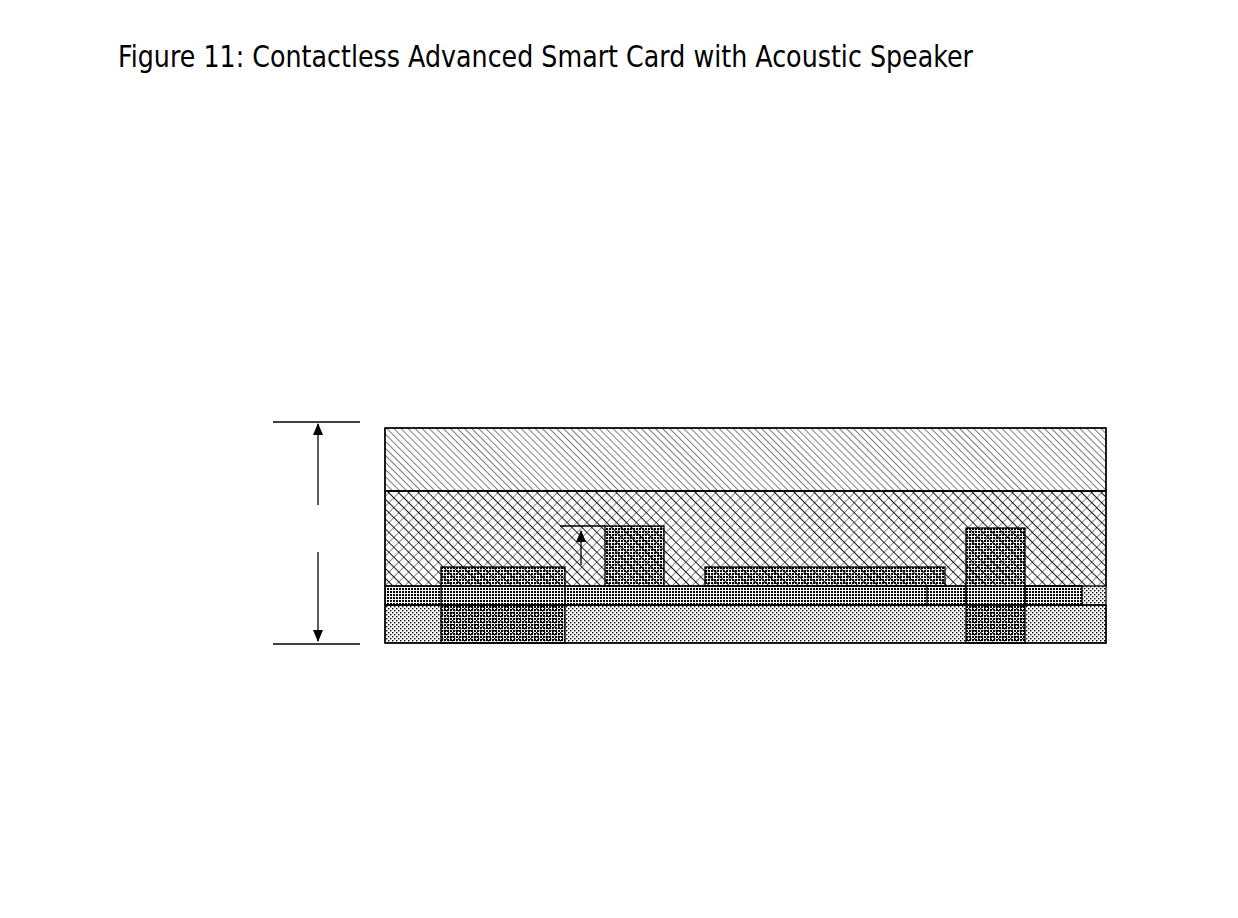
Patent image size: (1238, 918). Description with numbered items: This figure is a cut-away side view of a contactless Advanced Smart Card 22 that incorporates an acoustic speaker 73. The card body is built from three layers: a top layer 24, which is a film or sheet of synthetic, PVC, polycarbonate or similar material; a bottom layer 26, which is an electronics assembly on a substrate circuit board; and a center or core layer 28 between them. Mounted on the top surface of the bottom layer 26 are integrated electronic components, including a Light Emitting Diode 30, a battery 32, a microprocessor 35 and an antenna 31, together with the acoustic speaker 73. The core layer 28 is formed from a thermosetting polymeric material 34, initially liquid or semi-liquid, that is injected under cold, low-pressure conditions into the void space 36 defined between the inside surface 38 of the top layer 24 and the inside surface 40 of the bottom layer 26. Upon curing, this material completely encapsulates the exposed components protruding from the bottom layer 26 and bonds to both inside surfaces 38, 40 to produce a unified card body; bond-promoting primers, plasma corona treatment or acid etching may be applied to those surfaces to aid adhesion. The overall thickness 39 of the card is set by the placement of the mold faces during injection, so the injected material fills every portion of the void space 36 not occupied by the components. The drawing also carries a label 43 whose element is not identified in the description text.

The Advanced Smart Card 22 is at (479, 270).
The top layer 24 is at (788, 468).
The bottom layer 26 is at (627, 626).
The center or core layer 28 is at (1068, 547).
The Light Emitting Diode 30 is at (1000, 563).
The antenna 31 is at (722, 608).
The battery 32 is at (861, 564).
The thermosetting polymeric material 34 is at (812, 532).
The microprocessor 35 is at (640, 563).
The void space 36 is at (401, 486).
The inside surface of the top layer 38 is at (945, 493).
The thickness 39 is at (316, 533).
The inside surface of the bottom layer 40 is at (1045, 584).
The layer boundary 43 is at (581, 488).
The acoustic speaker 73 is at (502, 608).